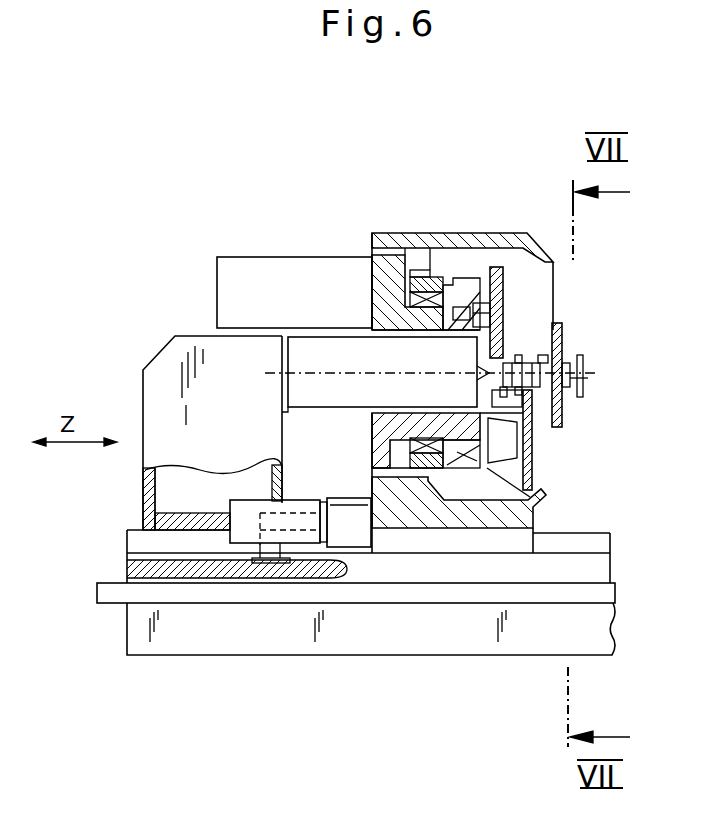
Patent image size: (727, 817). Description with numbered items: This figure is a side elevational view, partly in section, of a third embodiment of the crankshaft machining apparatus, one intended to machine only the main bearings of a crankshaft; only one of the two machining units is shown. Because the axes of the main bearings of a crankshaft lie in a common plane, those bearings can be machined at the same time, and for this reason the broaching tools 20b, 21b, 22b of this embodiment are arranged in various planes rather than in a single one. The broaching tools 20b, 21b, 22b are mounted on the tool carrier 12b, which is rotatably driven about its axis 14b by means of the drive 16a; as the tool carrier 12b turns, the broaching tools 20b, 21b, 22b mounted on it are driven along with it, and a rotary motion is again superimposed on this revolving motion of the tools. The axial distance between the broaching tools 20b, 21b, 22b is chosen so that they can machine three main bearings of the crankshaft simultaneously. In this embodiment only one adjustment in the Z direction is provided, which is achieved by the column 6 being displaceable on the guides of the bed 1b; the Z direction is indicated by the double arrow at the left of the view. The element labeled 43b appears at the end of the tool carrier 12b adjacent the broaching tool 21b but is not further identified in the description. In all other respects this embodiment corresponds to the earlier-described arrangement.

The bed 1b is at (272, 633).
The drive 16a is at (258, 277).
The axis 14b is at (337, 373).
The column 6 is at (426, 248).
The tool carrier 12b is at (545, 498).
The broaching tool 20b is at (502, 292).
The broaching tool 21b is at (563, 410).
The broaching tool 22b is at (532, 477).
The adjusting screw 43b is at (588, 378).